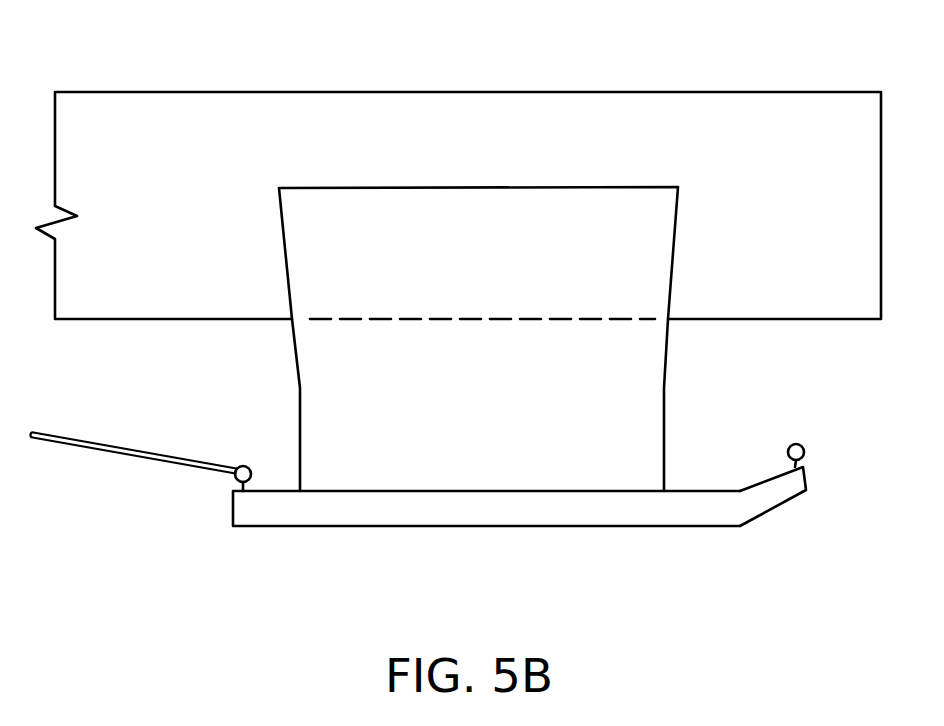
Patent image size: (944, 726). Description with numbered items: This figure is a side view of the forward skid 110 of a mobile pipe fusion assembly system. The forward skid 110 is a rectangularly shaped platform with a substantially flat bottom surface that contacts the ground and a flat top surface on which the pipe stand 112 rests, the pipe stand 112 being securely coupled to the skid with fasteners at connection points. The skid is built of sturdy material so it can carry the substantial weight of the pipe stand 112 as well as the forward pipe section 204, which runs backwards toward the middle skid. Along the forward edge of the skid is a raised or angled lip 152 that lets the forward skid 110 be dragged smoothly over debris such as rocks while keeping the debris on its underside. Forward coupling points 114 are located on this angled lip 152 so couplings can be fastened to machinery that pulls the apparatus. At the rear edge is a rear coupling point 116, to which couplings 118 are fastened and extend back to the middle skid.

The forward pipe section 204 is at (758, 105).
The pipe stand 112 is at (386, 215).
The forward skid 110 is at (337, 527).
The raised or angled lip 152 is at (768, 497).
The rear coupling point 116 is at (238, 465).
The forward coupling points 114 is at (800, 442).
The couplings 118 is at (92, 438).